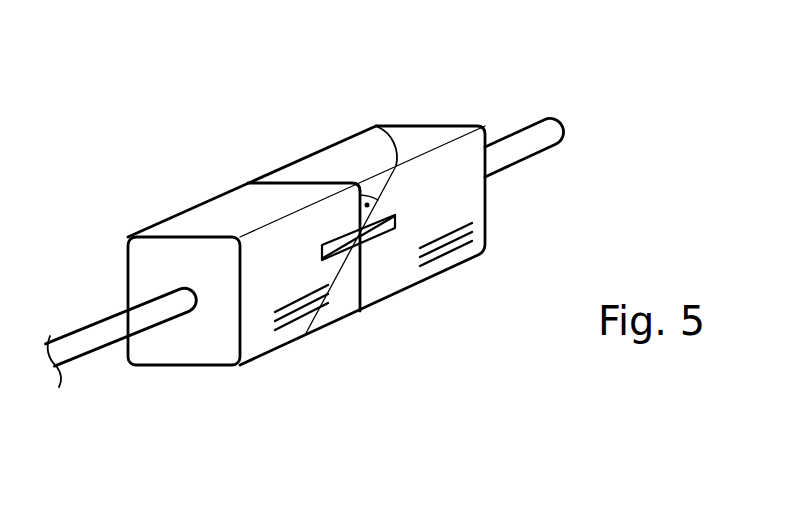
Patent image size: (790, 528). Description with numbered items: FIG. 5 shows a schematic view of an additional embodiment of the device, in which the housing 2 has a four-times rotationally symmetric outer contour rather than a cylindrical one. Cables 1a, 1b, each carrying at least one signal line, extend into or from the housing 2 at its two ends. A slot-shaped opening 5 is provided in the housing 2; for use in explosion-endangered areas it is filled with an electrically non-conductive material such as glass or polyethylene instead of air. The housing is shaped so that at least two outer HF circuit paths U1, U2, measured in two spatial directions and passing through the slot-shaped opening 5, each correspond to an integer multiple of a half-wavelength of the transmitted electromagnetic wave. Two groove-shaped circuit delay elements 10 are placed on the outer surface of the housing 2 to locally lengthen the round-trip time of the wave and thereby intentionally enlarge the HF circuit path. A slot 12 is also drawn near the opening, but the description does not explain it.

The cable 1a is at (88, 348).
The cable 1b is at (532, 145).
The housing 2 is at (437, 125).
The slot-shaped opening 5 is at (368, 232).
The circuit delay elements 10 is at (296, 342).
The slot 12 is at (374, 232).
The outer HF circuit path U1 is at (313, 183).
The outer HF circuit path U2 is at (394, 147).